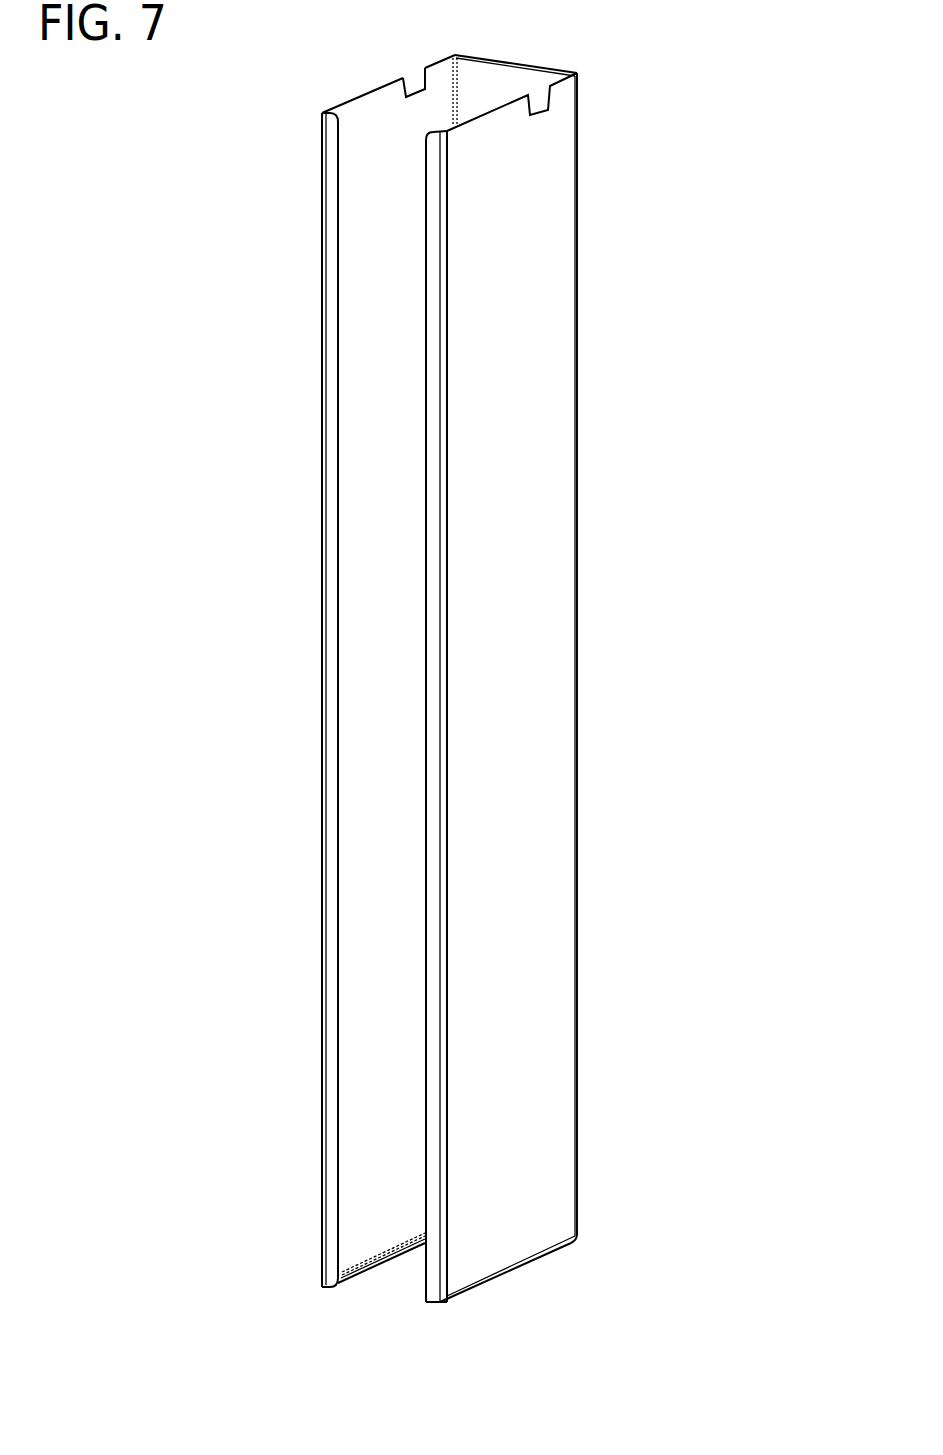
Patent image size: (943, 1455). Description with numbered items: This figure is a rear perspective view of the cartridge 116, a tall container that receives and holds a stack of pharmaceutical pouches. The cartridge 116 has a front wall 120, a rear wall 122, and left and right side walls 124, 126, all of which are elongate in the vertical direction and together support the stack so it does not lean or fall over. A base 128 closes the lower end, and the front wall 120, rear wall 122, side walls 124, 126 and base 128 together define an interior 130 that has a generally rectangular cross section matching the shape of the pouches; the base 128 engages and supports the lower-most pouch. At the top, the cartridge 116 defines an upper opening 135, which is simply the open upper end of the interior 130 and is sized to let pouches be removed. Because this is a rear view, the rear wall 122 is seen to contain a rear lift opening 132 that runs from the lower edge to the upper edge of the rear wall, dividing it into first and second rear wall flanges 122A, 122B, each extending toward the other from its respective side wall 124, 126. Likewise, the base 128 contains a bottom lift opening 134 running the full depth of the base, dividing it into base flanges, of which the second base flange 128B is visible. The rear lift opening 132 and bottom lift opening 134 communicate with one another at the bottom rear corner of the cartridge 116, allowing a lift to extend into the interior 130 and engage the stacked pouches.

The cartridge 116 is at (756, 84).
The front wall 120 is at (503, 78).
The rear wall 122 is at (330, 913).
The first rear wall flange 122A is at (432, 181).
The second rear wall flange 122B is at (325, 128).
The left side wall 124 is at (540, 710).
The right side wall 126 is at (365, 770).
The base 128 is at (355, 1283).
The second base flange 128B is at (375, 1267).
The interior 130 is at (400, 123).
The rear lift opening 132 is at (394, 647).
The bottom lift opening 134 is at (385, 1296).
The upper opening 135 is at (466, 67).